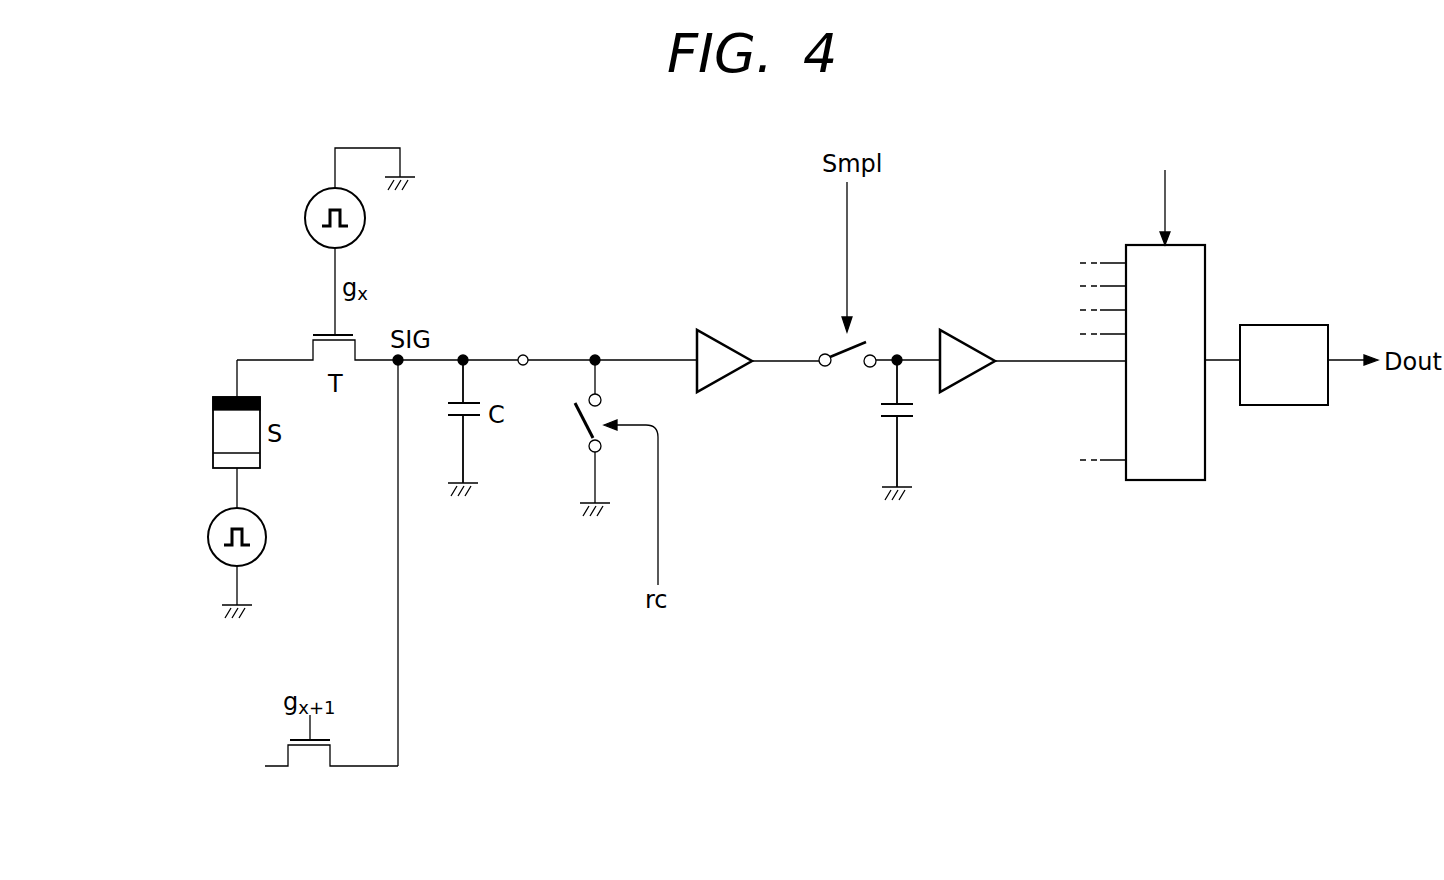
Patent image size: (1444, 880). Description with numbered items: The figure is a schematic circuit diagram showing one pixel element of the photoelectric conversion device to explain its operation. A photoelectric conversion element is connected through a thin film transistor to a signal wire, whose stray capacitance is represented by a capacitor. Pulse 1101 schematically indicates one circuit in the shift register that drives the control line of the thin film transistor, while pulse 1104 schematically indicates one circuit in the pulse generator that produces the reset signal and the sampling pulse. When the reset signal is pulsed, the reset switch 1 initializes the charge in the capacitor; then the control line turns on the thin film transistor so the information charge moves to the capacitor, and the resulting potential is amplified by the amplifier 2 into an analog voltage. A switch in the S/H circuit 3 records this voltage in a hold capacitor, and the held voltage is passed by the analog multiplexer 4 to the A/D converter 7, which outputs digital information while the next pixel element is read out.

The pulse 1101 is at (365, 218).
The pulse 1104 is at (266, 537).
The reset switch 1 is at (580, 426).
The amplifier 2 is at (722, 342).
The S/H circuit 3 is at (960, 489).
The analog multiplexer 4 is at (1165, 480).
The A/D converter 7 is at (1284, 405).